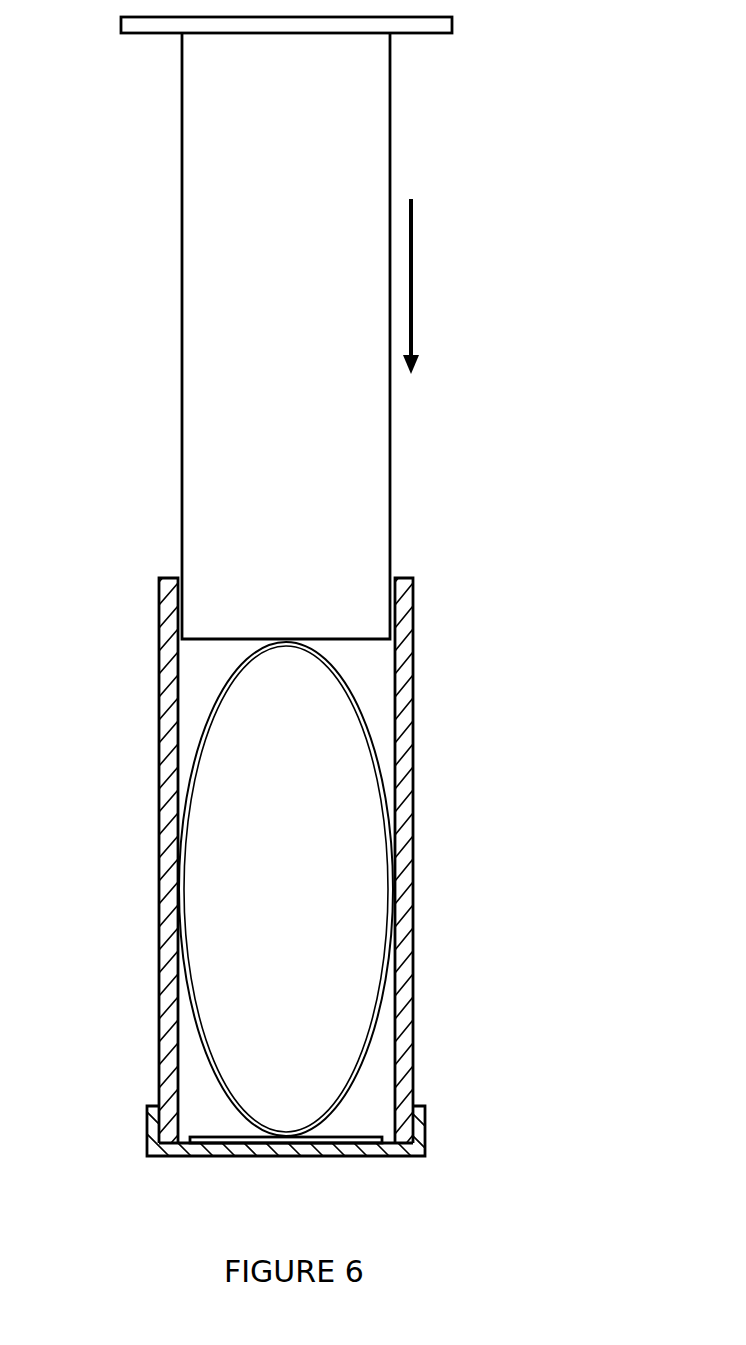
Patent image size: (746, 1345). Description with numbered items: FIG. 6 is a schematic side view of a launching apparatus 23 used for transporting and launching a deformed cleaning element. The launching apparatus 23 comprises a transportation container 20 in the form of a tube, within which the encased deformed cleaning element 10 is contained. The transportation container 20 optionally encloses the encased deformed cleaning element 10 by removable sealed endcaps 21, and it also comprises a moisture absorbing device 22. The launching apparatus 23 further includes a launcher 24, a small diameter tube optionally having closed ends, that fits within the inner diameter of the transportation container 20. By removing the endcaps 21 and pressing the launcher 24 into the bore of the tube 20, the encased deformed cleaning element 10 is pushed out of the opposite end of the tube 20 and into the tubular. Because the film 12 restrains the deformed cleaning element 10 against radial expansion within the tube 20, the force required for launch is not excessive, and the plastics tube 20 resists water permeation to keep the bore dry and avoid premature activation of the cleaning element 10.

The encased deformed cleaning element 10 is at (197, 734).
The film 12 is at (358, 702).
The transportation container 20 is at (405, 860).
The removable sealed endcap 21 is at (365, 1152).
The moisture absorbing device 22 is at (192, 1142).
The launching apparatus 23 is at (520, 238).
The launcher 24 is at (198, 332).